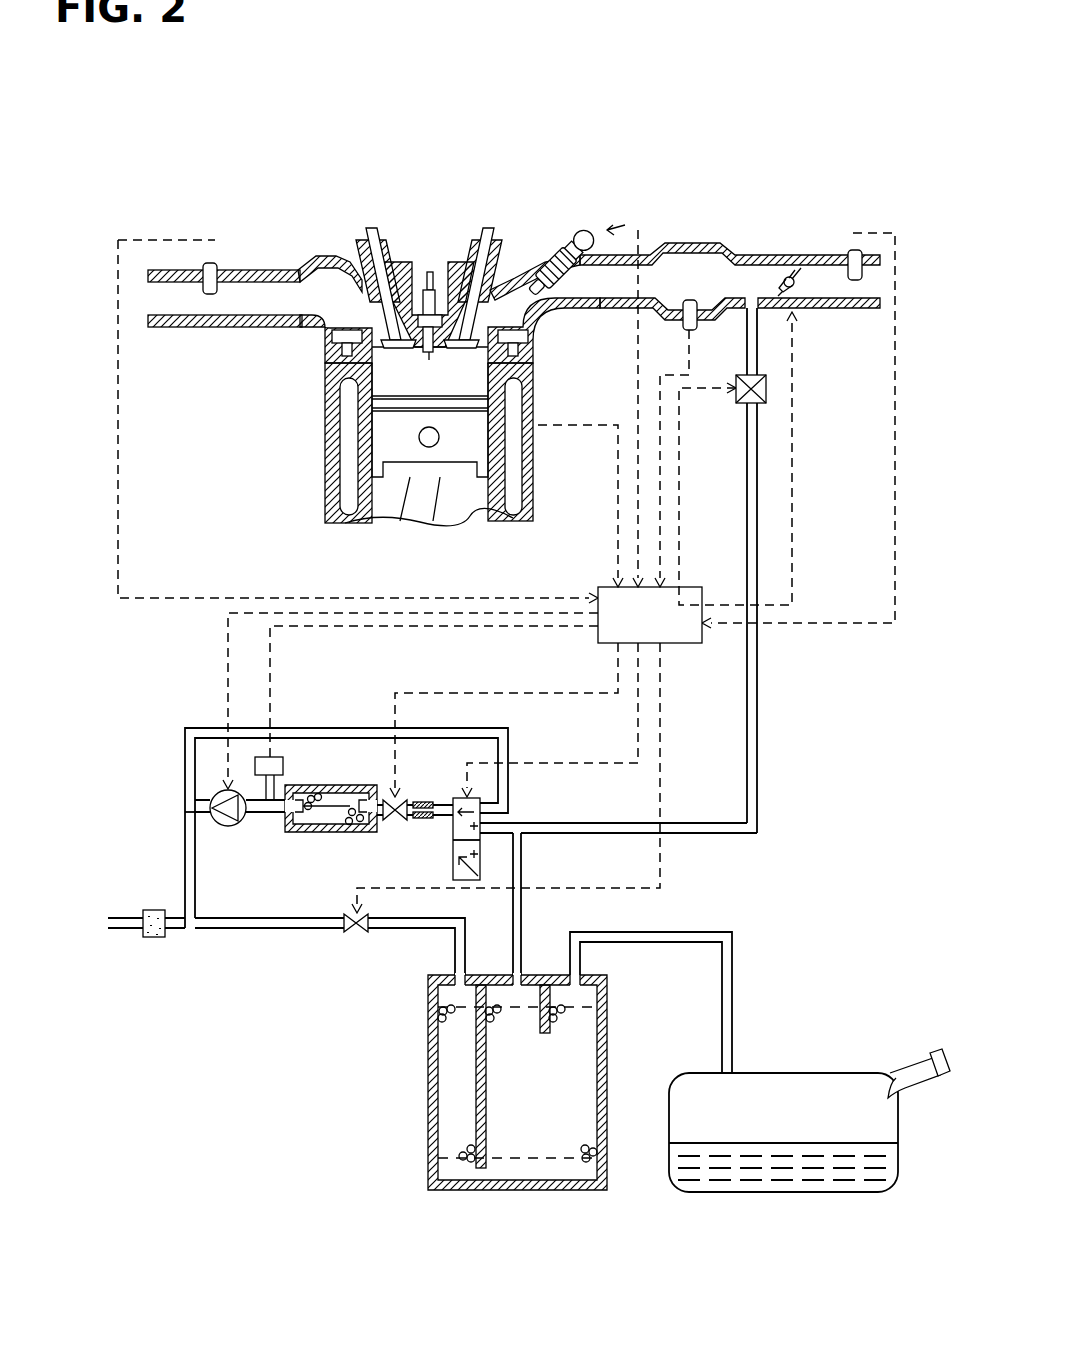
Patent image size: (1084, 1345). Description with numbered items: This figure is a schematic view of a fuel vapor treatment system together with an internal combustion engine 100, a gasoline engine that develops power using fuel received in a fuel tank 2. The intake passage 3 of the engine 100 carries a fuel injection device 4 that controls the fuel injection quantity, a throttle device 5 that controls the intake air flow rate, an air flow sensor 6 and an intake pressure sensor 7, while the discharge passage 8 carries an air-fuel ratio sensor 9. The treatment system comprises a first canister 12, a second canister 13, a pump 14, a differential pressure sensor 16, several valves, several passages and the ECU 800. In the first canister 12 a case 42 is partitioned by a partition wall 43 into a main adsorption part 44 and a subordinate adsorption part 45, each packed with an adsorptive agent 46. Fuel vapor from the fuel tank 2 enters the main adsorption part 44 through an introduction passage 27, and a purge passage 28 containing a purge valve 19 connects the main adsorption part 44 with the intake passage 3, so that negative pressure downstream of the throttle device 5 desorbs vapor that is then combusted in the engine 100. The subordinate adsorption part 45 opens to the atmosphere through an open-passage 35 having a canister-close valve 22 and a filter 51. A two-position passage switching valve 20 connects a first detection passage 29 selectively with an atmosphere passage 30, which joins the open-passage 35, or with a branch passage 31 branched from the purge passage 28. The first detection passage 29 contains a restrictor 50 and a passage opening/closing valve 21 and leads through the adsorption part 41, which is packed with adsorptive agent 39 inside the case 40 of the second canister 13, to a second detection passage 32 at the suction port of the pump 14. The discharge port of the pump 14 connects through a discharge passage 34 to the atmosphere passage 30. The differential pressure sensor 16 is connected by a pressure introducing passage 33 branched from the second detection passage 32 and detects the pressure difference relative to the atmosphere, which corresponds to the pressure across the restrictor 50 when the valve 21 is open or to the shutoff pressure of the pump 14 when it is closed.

The fuel tank 2 is at (790, 1192).
The intake passage 3 is at (672, 243).
The fuel injection device 4 is at (570, 235).
The throttle device 5 is at (783, 268).
The air flow sensor 6 is at (850, 252).
The intake pressure sensor 7 is at (690, 300).
The discharge passage 8 is at (268, 268).
The air-fuel ratio sensor 9 is at (211, 262).
The first canister 12 is at (640, 1281).
The second canister 13 is at (345, 1066).
The pump 14 is at (210, 802).
The differential pressure sensor 16 is at (263, 787).
The purge valve 19 is at (740, 403).
The passage switching valve 20 is at (482, 862).
The passage opening/closing valve 21 is at (383, 797).
The canister-close valve 22 is at (357, 935).
The introduction passage 27 is at (733, 1000).
The purge passage 28 is at (758, 750).
The first detection passage 29 is at (457, 800).
The atmosphere passage 30 is at (327, 727).
The branch passage 31 is at (505, 827).
The second detection passage 32 is at (240, 815).
The pressure introducing passage 33 is at (242, 794).
The discharge passage 34 is at (200, 812).
The open-passage 35 is at (403, 928).
The adsorptive agent 39 is at (313, 833).
The case 40 is at (260, 817).
The adsorption part 41 is at (295, 822).
The case 42 is at (557, 1190).
The partition wall 43 is at (480, 1167).
The main adsorption part 44 is at (518, 1128).
The subordinate adsorption part 45 is at (452, 1128).
The adsorptive agent 46 is at (587, 1193).
The restrictor 50 is at (417, 800).
The filter 51 is at (145, 937).
The internal combustion engine 100 is at (325, 428).
The ECU 800 is at (685, 643).